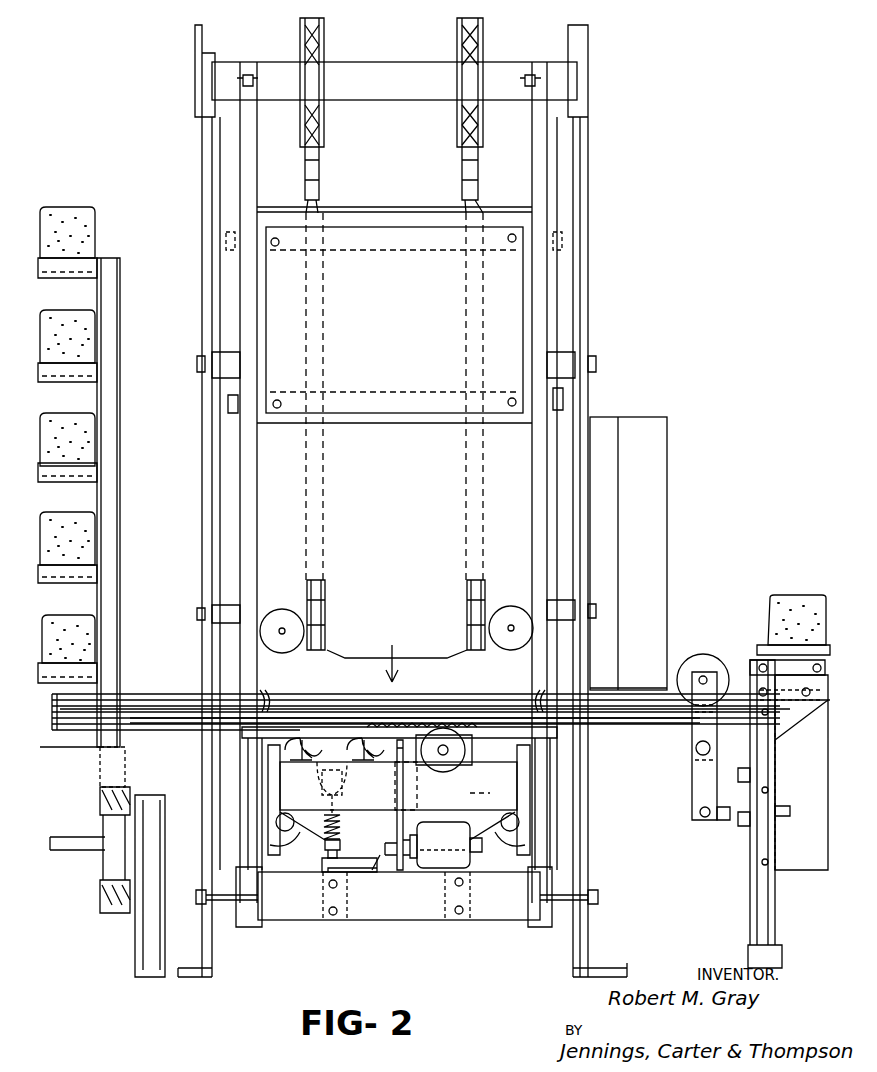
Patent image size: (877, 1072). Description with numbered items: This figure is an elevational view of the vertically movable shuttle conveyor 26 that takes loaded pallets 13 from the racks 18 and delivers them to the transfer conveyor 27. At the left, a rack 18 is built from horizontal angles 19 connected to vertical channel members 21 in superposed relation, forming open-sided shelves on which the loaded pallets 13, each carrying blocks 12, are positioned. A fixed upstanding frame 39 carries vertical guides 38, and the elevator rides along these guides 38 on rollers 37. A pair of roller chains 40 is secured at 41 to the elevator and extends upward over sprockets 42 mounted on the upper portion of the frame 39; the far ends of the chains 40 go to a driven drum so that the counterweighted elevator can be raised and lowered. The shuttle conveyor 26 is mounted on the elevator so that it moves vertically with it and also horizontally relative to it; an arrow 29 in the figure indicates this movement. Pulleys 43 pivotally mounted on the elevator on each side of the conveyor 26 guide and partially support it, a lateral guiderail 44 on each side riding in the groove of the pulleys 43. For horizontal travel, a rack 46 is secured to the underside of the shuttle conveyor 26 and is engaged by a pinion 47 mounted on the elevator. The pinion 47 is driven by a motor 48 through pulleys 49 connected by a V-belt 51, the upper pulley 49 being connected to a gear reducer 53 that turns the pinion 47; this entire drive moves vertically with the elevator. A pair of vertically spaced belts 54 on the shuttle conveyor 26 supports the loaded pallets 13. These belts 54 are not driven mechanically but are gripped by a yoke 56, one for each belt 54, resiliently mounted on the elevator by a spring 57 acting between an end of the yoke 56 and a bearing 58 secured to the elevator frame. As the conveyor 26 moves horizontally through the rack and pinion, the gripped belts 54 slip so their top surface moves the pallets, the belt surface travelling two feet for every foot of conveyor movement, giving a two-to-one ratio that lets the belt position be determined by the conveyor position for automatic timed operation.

The block 12 is at (64, 312).
The loaded pallets 13 is at (760, 640).
The rack 18 is at (133, 660).
The horizontal angles 19 is at (68, 275).
The vertical channel members 21 is at (115, 293).
The shuttle conveyor 26 is at (176, 694).
The transfer conveyor 27 is at (727, 654).
The direction arrow 29 is at (396, 653).
The rollers 37 is at (284, 620).
The vertical guides 38 is at (252, 565).
The fixed upstanding frame 39 is at (599, 419).
The roller chains 40 is at (318, 583).
The chain attachment point 41 is at (325, 648).
The sprockets 42 is at (324, 35).
The pulleys 43 is at (270, 700).
The lateral guiderail 44 is at (148, 730).
The rack 46 is at (474, 728).
The pinion 47 is at (462, 758).
The motor 48 is at (432, 862).
The pulleys 49 is at (403, 752).
The V-belt 51 is at (400, 808).
The gear reducer 53 is at (399, 798).
The belts 54 is at (128, 700).
The yoke 56 is at (322, 800).
The spring 57 is at (340, 842).
The bearing 58 is at (340, 824).